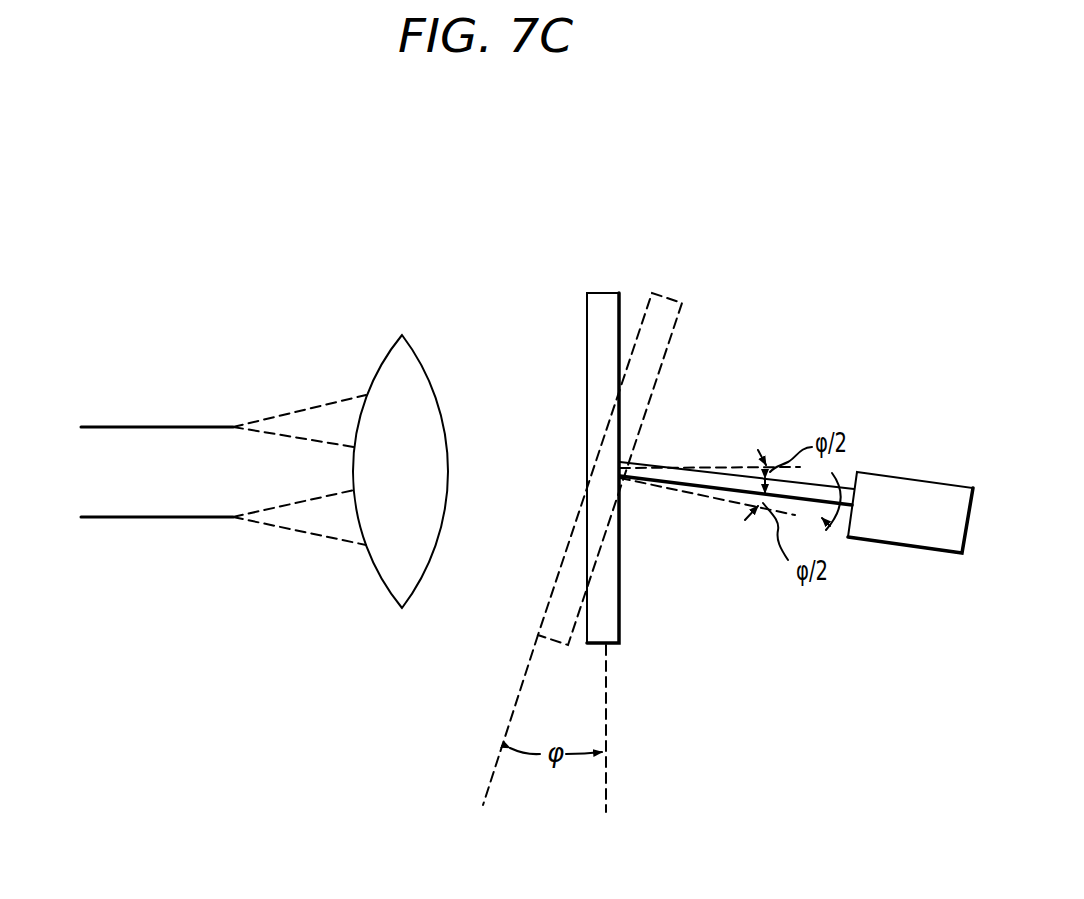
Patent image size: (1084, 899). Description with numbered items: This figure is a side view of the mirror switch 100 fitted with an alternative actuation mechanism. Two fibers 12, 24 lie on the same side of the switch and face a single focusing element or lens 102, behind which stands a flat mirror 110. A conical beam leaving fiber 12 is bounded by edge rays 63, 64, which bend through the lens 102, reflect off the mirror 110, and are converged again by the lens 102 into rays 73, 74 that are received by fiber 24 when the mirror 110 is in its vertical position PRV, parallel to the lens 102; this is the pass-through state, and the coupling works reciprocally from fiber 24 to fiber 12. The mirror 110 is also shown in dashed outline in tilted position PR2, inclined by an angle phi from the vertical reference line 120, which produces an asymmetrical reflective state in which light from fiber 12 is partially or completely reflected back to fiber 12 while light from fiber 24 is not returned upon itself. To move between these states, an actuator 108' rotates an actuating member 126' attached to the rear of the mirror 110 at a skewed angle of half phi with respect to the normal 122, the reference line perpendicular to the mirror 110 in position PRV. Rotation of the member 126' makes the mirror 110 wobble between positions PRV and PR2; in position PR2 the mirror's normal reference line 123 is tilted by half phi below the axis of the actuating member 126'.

The fiber 12 is at (130, 423).
The fiber 24 is at (160, 520).
The edge ray 63 is at (332, 398).
The edge ray 64 is at (280, 437).
The ray 73 is at (312, 497).
The ray 74 is at (313, 535).
The focusing element 102 is at (422, 485).
The mirror 110 is at (592, 313).
The vertical reference line 120 is at (607, 795).
The actuating member 126' is at (737, 447).
The normal reference line 122 is at (728, 467).
The normal reference line 123 is at (725, 500).
The actuator 108' is at (910, 489).
The mirror switch 100 is at (753, 254).
The vertical position PRV is at (617, 660).
The tilted position PR2 is at (529, 641).